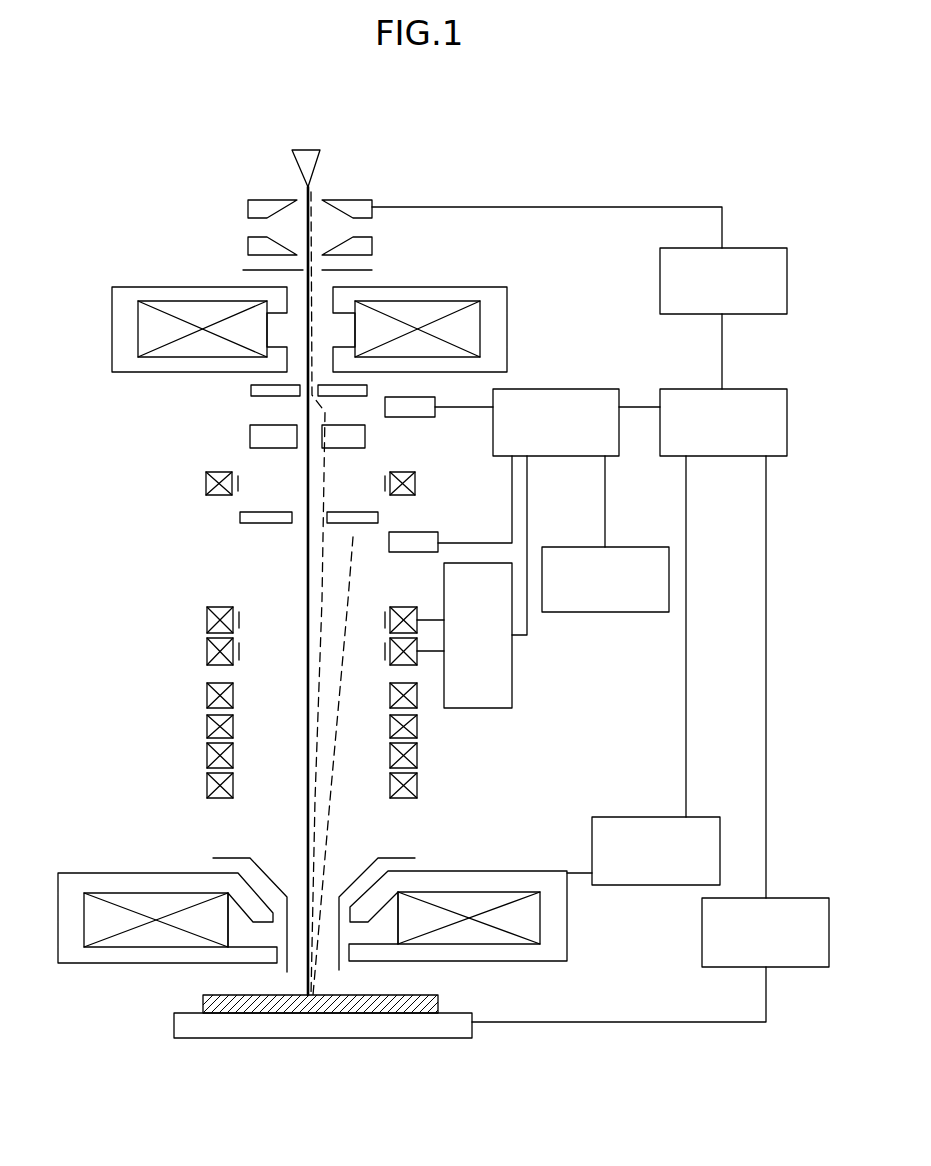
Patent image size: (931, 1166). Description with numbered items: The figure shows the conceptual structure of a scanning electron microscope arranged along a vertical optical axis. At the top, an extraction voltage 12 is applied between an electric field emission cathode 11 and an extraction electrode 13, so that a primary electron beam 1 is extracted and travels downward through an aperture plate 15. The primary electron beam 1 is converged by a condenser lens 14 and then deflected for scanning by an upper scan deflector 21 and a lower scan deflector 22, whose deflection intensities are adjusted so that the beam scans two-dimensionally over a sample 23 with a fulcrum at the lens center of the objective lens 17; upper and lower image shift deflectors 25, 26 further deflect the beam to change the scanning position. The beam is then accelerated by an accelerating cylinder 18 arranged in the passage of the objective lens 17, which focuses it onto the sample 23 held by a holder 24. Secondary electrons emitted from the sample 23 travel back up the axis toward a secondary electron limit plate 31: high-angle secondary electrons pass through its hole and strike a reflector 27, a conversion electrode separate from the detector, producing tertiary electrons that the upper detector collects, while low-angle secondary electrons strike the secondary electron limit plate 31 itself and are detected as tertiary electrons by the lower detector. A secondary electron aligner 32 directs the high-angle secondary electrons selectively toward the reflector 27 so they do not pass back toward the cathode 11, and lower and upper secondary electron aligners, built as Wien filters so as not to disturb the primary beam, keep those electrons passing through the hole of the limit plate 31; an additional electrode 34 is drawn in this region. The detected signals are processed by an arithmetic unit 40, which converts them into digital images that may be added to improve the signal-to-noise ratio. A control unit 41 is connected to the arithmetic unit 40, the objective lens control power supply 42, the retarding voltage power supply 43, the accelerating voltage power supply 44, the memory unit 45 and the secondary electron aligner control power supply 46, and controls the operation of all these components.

The primary electron beam 1 is at (307, 692).
The electric field emission cathode 11 is at (296, 151).
The extraction voltage 12 is at (248, 200).
The extraction electrode 13 is at (248, 246).
The condenser lens 14 is at (112, 338).
The aperture 15 is at (372, 270).
The objective lens 17 is at (58, 873).
The accelerating cylinder 18 is at (213, 858).
The upper scan deflector 21 is at (207, 727).
The lower scan deflector 22 is at (207, 787).
The sample 23 is at (203, 1000).
The holder 24 is at (174, 1025).
The upper image shift deflector 25 is at (207, 695).
The lower image shift deflector 26 is at (207, 757).
The reflector 27 is at (251, 392).
The secondary electron limit plate 31 is at (240, 517).
The secondary electron aligner 32 is at (206, 483).
The electrode 34 is at (250, 436).
The arithmetic unit 40 is at (556, 389).
The control unit 41 is at (692, 389).
The objective lens control power supply 42 is at (641, 817).
The retarding voltage power supply 43 is at (702, 934).
The accelerating voltage power supply 44 is at (660, 280).
The memory unit 45 is at (606, 612).
The secondary electron aligner control power supply 46 is at (478, 708).